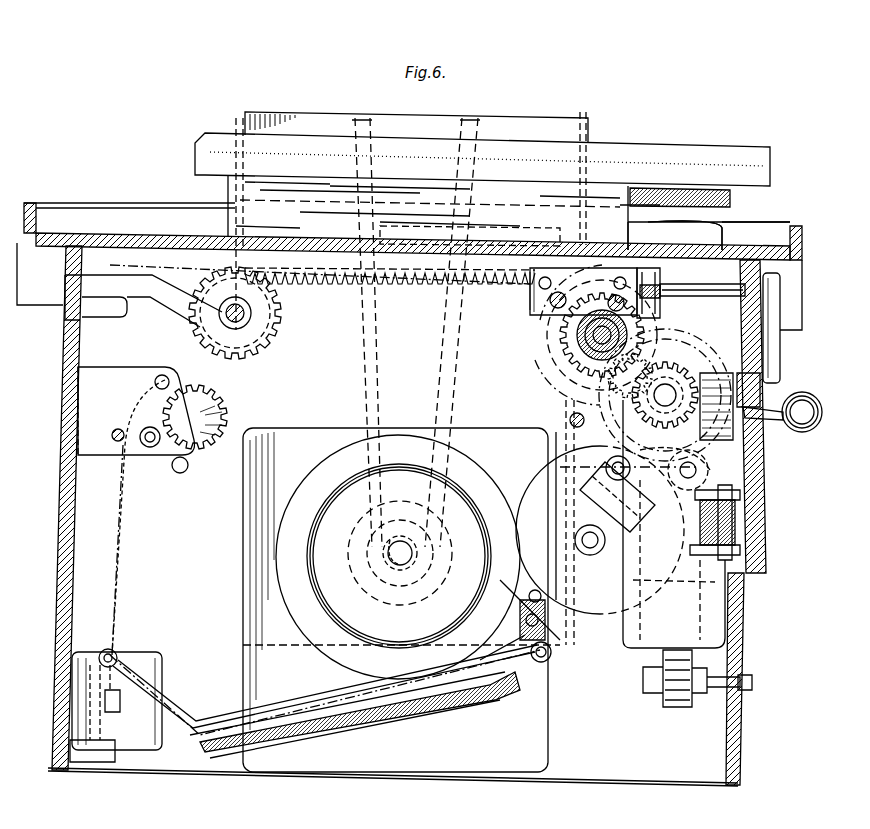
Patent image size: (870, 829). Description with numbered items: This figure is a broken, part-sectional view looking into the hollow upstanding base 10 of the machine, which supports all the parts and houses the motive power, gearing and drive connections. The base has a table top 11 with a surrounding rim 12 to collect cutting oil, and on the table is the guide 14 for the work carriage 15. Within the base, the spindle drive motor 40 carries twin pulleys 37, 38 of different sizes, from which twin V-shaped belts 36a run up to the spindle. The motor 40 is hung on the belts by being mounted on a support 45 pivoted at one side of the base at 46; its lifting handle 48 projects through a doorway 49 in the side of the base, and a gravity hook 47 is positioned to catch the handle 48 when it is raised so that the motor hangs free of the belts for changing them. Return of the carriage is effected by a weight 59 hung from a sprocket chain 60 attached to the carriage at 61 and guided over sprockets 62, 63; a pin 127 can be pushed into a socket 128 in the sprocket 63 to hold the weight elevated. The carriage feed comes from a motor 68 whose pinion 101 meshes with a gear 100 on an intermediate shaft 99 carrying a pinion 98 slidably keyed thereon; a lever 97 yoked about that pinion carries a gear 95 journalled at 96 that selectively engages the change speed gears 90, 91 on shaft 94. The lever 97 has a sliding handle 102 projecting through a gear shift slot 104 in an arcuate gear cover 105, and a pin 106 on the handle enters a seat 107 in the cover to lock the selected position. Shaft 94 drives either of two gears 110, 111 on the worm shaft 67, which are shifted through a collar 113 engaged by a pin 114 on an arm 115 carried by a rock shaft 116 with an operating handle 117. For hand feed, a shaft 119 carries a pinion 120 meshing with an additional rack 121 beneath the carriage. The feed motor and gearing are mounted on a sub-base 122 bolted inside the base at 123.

The hollow upstanding base 10 is at (66, 507).
The table top 11 is at (165, 238).
The surrounding rim 12 is at (40, 206).
The guide 14 is at (375, 197).
The work carriage 15 is at (624, 150).
The twin V-shaped belts 36a is at (375, 128).
The twin pulley 37 is at (404, 588).
The twin pulley 38 is at (368, 590).
The motor 40 is at (300, 620).
The support 45 is at (375, 725).
The pivot 46 is at (108, 652).
The hook 47 is at (525, 632).
The lifting handle 48 is at (552, 666).
The doorway 49 is at (545, 722).
The weight 59 is at (158, 662).
The sprocket chain 60 is at (125, 554).
The chain attachment 61 is at (470, 234).
The roll or sprocket 62 is at (532, 294).
The chain sprocket 63 is at (222, 408).
The worm shaft 67 is at (592, 337).
The motor 68 is at (590, 610).
The change speed gear 90 is at (700, 360).
The change speed gear 91 is at (708, 372).
The shaft 94 is at (648, 392).
The gear 95 is at (748, 500).
The journal 96 is at (685, 476).
The lever 97 is at (748, 492).
The pinion 98 is at (600, 488).
The intermediate shaft 99 is at (612, 462).
The gear 100 is at (560, 448).
The pinion 101 is at (590, 556).
The sliding handle 102 is at (815, 428).
The gear shift slot 104 is at (745, 482).
The arcuate gear cover 105 is at (745, 520).
The pin 106 is at (767, 406).
The seat 107 is at (760, 390).
The gear 110 is at (565, 390).
The gear 111 is at (560, 368).
The collar 113 is at (585, 345).
The pin 114 is at (662, 322).
The arm 115 is at (695, 313).
The rock shaft 116 is at (722, 282).
The operating handle 117 is at (782, 350).
The shaft 119 is at (222, 318).
The pinion 120 is at (262, 322).
The additional rack 121 is at (322, 285).
The sub-base 122 is at (740, 618).
The bolting 123 is at (700, 690).
The pin 127 is at (136, 411).
The socket 128 is at (180, 470).